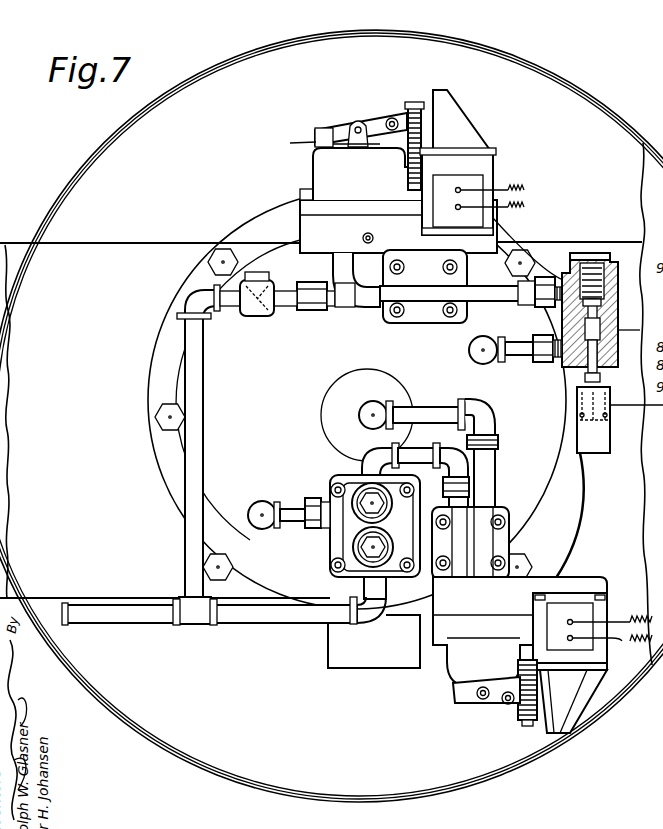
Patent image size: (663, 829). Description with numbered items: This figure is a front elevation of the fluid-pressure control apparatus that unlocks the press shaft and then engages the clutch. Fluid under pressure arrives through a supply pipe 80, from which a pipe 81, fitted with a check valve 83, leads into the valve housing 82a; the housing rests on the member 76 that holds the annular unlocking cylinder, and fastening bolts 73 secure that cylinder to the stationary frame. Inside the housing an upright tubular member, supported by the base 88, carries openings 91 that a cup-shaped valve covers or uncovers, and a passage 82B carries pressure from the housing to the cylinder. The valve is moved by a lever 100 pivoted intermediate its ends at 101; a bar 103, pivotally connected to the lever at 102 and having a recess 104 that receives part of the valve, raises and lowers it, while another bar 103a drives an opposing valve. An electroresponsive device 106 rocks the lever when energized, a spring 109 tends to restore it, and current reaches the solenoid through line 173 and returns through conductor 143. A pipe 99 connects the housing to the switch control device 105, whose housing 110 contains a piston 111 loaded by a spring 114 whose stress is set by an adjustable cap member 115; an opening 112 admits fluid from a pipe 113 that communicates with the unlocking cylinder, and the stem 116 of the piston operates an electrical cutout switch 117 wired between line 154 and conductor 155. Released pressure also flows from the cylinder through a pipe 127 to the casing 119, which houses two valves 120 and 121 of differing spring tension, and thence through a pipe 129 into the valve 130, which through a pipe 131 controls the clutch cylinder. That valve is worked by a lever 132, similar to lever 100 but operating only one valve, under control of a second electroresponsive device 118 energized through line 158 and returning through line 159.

The opening 91 is at (108, 154).
The member 76 is at (215, 490).
The fastening bolts 73 is at (223, 248).
The pipe 81 is at (197, 413).
The check valve 83 is at (256, 312).
The passage 82B is at (372, 262).
The valve housing 82a is at (367, 174).
The base 88 is at (300, 231).
The lever 100 is at (338, 128).
The pivot 101 is at (360, 121).
The pivotal connection 102 is at (318, 131).
The bar 103 is at (316, 140).
The bar 103a is at (356, 145).
The spring 109 is at (408, 110).
The electroresponsive device 106 is at (482, 178).
The line 173 is at (526, 186).
The conductor 143 is at (526, 203).
The pipe 99 is at (493, 296).
The switch control device 105 is at (565, 262).
The adjustable cap member 115 is at (598, 256).
The spring 114 is at (602, 296).
The piston 111 is at (636, 322).
The recess 104 is at (640, 323).
The housing 110 is at (563, 320).
The pipe 113 is at (500, 359).
The opening 112 is at (570, 368).
The stem 116 is at (600, 374).
The conductor 155 is at (612, 381).
The electrical cutout device 117 is at (578, 424).
The line 154 is at (630, 405).
The pipe 131 is at (440, 410).
The pipe 129 is at (386, 446).
The casing 119 is at (352, 532).
The valve 120 is at (363, 497).
The pipe 127 is at (289, 507).
The valve 121 is at (356, 572).
The supply pipe 80 is at (106, 614).
The valve 130 is at (520, 632).
The electroresponsive device 118 is at (578, 610).
The line 158 is at (620, 619).
The line 159 is at (626, 643).
The lever 132 is at (500, 703).